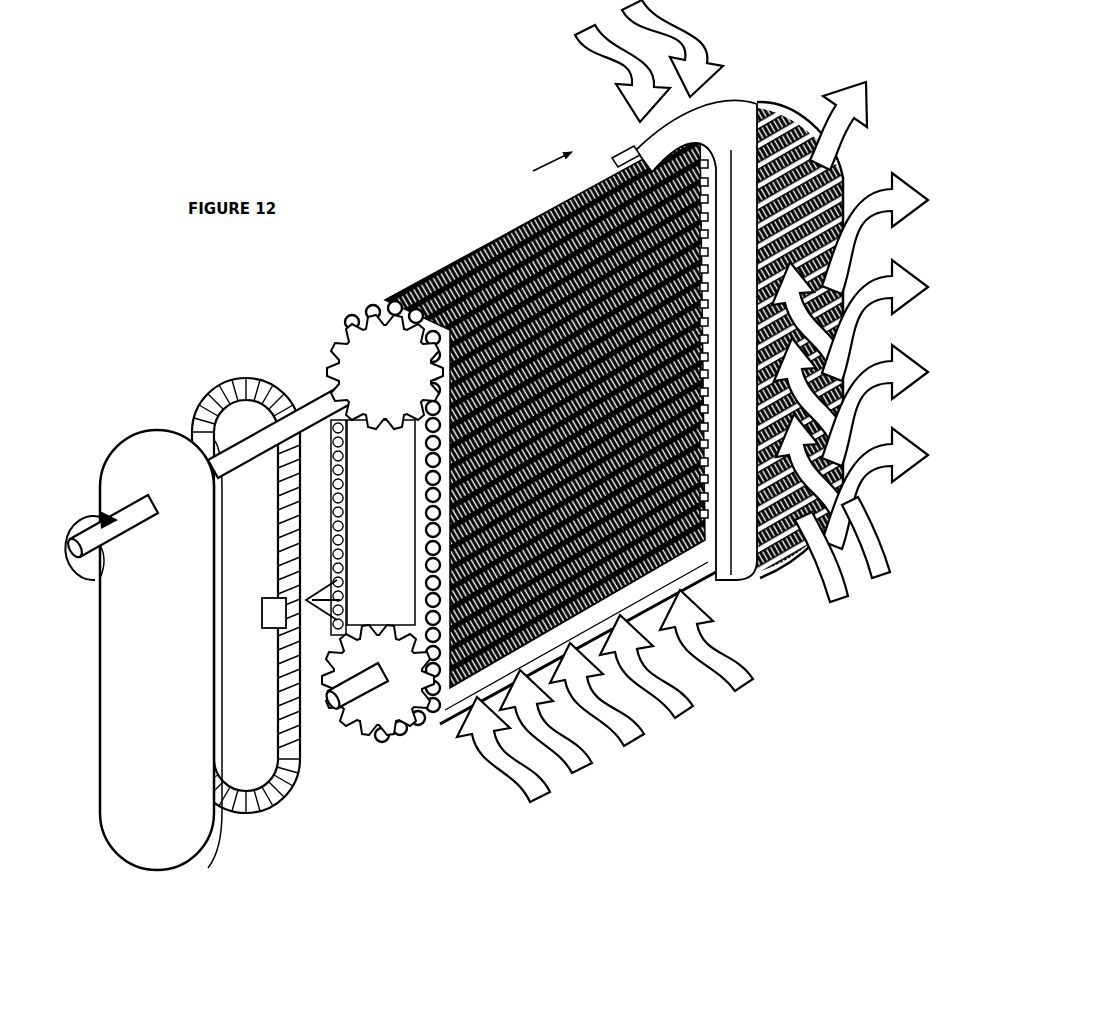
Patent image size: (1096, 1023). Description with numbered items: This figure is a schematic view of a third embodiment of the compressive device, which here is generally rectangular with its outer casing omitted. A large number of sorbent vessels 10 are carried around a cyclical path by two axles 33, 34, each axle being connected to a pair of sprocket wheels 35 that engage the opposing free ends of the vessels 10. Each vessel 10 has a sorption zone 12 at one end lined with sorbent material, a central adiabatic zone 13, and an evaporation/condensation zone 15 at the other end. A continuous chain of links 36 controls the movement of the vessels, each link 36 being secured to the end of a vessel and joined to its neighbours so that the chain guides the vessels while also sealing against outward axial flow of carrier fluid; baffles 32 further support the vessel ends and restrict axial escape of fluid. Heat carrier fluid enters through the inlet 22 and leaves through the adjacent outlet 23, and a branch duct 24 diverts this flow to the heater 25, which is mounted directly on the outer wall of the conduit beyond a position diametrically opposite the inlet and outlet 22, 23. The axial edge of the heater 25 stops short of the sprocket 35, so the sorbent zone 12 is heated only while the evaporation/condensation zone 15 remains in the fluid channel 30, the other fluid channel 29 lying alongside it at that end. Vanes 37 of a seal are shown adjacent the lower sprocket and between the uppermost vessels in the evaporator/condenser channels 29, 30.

The sorbent vessel 10 is at (448, 262).
The sorption zone 12 is at (568, 152).
The adiabatic zone 13 is at (573, 115).
The evaporation/condensation zone 15 is at (647, 42).
The inlet 22 is at (507, 758).
The outlet 23 is at (266, 622).
The branch duct 24 is at (850, 361).
The heated section 25 is at (322, 381).
The fluid channel 29 is at (842, 549).
The fluid channel 30 is at (651, 61).
The baffle 32 is at (120, 455).
The axle 33 is at (77, 540).
The axle 34 is at (327, 714).
The sprocket wheel 35 is at (355, 346).
The chain of links 36 is at (195, 410).
The vanes 37 is at (737, 106).